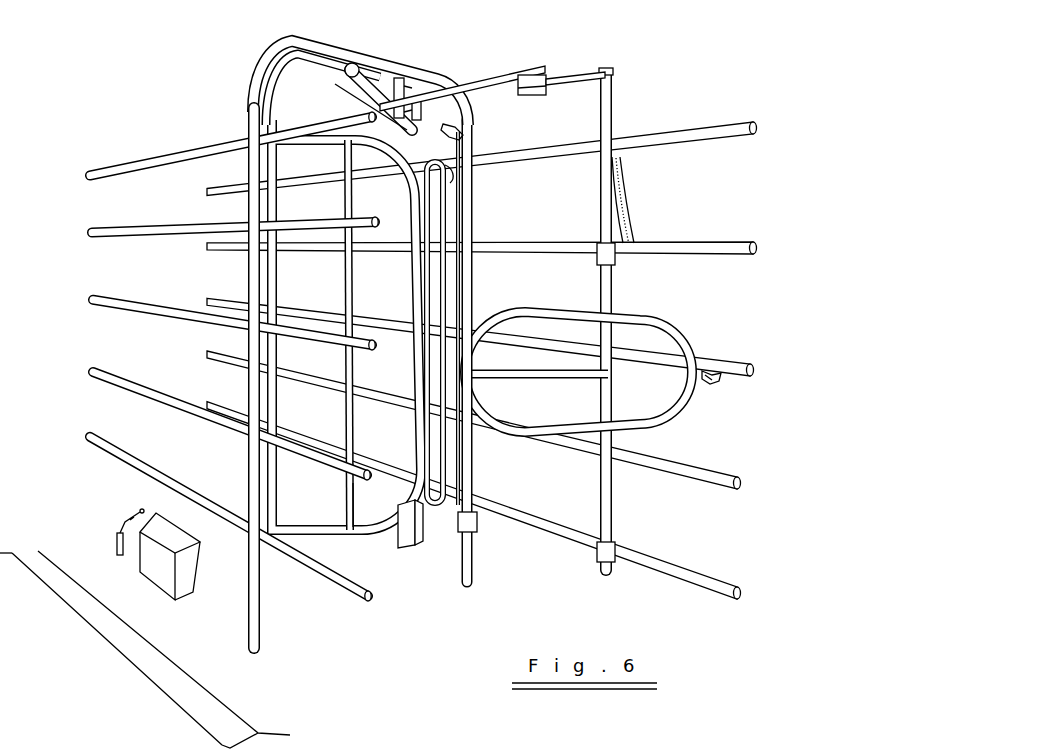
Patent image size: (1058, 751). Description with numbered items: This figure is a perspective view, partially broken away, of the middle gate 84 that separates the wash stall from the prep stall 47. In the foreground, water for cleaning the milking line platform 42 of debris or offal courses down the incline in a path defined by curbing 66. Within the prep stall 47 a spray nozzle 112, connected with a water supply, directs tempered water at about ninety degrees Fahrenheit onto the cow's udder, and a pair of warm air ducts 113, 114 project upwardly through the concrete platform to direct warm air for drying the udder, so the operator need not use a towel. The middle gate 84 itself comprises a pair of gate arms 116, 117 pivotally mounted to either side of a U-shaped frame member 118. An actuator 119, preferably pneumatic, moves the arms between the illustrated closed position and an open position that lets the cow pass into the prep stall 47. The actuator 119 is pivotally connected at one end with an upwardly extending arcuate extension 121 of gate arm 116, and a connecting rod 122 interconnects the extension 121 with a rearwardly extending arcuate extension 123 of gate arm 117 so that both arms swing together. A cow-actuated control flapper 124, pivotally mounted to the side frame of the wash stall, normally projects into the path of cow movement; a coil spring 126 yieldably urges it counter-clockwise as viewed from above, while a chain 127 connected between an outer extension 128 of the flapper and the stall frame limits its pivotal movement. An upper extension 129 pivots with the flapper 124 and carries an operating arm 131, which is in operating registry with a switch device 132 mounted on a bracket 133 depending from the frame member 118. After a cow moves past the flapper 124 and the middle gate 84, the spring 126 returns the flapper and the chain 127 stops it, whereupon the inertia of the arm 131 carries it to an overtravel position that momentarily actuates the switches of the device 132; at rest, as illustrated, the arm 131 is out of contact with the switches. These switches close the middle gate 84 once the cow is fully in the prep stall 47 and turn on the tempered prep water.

The milking line platform 42 is at (414, 672).
The prep stall 47 is at (148, 150).
The curbing 66 is at (207, 707).
The middle gate 84 is at (436, 72).
The spray nozzle 112 is at (123, 520).
The warm air duct 113 is at (194, 548).
The warm air duct 114 is at (400, 536).
The gate arm 116 is at (411, 278).
The gate arm 117 is at (433, 533).
The U-shaped frame member 118 is at (327, 43).
The actuator 119 is at (376, 72).
The arcuate extension 121 is at (298, 54).
The connecting rod 122 is at (348, 97).
The arcuate extension 123 is at (455, 133).
The control flapper 124 is at (542, 312).
The coil spring 126 is at (628, 206).
The chain 127 is at (709, 384).
The outer extension 128 is at (682, 322).
The upper extension 129 is at (611, 104).
The operating arm 131 is at (570, 78).
The switch device 132 is at (523, 96).
The bracket 133 is at (486, 76).